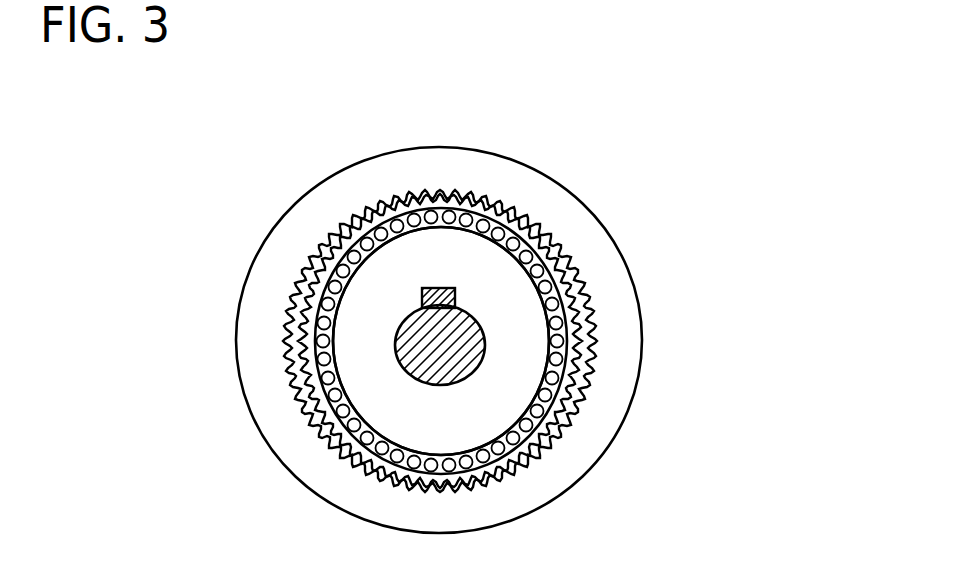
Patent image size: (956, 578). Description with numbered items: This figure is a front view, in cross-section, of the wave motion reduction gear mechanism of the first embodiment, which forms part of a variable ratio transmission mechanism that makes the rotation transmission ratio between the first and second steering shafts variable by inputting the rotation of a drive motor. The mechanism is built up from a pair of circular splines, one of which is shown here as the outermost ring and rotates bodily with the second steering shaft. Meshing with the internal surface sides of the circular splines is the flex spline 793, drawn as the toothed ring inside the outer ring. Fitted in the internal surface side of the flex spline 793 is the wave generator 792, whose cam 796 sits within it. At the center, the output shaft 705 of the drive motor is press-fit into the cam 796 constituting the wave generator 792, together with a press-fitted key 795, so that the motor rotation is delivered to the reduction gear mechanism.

The wave generator 792 is at (494, 204).
The flex spline 793 is at (580, 405).
The key 795 is at (422, 298).
The cam 796 is at (358, 345).
The output shaft 705 is at (450, 340).